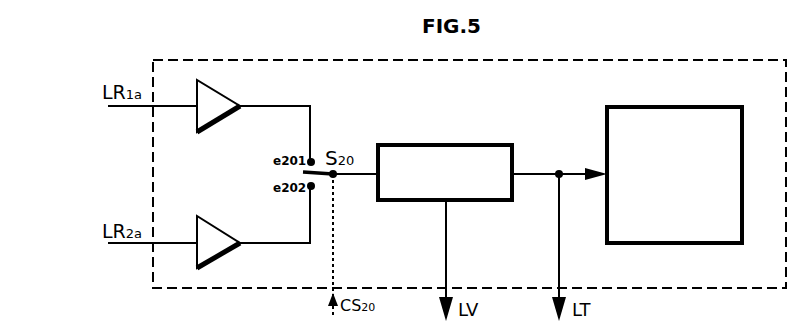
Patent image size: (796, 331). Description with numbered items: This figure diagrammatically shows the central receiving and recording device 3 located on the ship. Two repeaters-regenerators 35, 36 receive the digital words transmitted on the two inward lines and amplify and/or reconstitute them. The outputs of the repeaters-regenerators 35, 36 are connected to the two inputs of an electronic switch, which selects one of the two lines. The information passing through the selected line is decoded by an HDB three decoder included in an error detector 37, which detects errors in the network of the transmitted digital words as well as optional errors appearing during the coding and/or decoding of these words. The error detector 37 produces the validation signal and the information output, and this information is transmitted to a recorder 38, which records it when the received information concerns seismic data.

The central receiving and recording device 3 is at (692, 60).
The repeater-regenerator 35 is at (223, 93).
The repeater-regenerator 36 is at (223, 231).
The error detector 37 is at (437, 145).
The recorder 38 is at (656, 107).